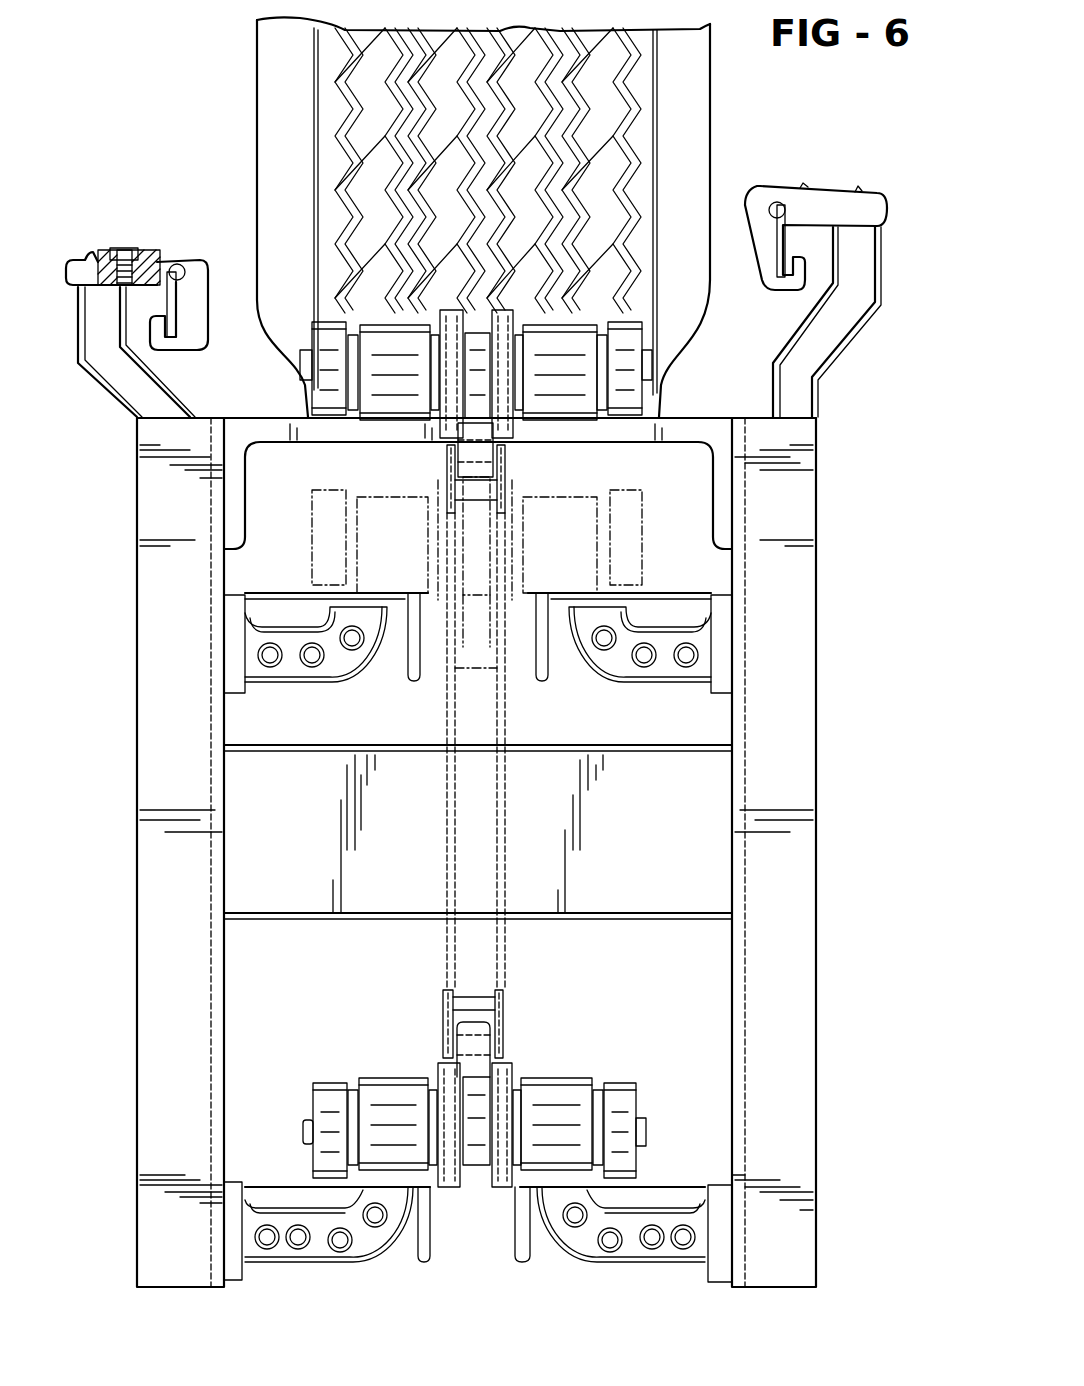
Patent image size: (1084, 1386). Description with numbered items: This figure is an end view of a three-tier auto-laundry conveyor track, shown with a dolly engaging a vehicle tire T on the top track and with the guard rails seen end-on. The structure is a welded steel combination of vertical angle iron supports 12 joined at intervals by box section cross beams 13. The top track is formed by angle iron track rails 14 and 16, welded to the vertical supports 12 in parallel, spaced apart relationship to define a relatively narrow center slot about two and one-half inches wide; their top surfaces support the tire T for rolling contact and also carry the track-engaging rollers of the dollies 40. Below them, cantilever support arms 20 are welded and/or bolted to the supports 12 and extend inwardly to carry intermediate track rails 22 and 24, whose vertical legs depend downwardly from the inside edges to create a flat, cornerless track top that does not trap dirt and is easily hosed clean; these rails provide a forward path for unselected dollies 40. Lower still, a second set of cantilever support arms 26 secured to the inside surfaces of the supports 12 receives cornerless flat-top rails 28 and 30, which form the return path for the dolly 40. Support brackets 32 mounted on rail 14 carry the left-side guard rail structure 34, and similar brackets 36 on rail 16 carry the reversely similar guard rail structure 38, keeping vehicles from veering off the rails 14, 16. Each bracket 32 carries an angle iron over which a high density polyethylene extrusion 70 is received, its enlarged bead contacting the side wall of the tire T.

The vehicle tire T is at (266, 62).
The vertical angle iron supports 12 is at (793, 570).
The box section cross beams 13 is at (624, 908).
The angle iron track rail 14 is at (247, 432).
The angle iron track rail 16 is at (708, 428).
The cantilever support arms 20 is at (352, 684).
The intermediate angle iron track rail 22 is at (378, 590).
The intermediate angle iron track rail 24 is at (575, 592).
The cantilever support arms 26 is at (665, 1215).
The track rail 28 is at (353, 1187).
The track rail 30 is at (515, 1230).
The support brackets 32 is at (102, 368).
The left-side guard rail structure 34 is at (126, 250).
The brackets 36 is at (850, 320).
The guard rail structure 38 is at (870, 185).
The dollies 40 is at (392, 388).
The high density polyethylene extrusion 70 is at (208, 262).